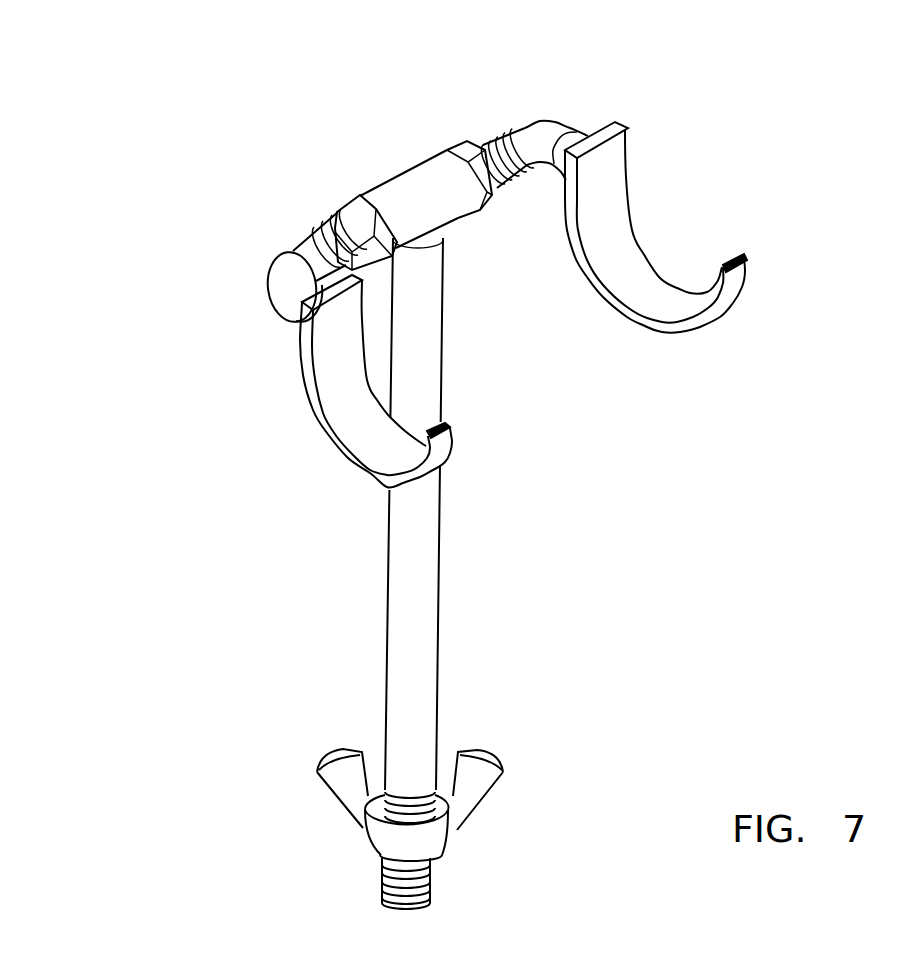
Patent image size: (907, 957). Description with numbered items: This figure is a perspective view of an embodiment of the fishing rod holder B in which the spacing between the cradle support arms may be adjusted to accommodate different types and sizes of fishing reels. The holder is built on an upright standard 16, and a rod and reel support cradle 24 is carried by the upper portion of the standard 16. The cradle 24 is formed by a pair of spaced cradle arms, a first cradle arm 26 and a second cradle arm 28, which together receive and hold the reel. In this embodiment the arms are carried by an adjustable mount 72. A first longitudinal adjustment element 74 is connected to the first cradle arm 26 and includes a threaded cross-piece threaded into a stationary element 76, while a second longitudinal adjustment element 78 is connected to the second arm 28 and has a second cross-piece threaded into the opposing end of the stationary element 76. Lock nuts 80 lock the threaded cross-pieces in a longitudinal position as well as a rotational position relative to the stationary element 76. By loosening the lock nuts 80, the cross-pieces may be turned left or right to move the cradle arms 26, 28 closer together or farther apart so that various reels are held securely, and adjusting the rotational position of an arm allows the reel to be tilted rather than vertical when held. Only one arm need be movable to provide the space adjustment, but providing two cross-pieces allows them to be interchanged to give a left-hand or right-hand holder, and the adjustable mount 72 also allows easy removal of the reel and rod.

The standard 16 is at (443, 621).
The rod and reel support cradle 24 is at (672, 213).
The first cradle arm 26 is at (748, 270).
The second cradle arm 28 is at (320, 432).
The adjustable mount 72 is at (353, 187).
The first longitudinal adjustment element 74 is at (547, 113).
The stationary element 76 is at (410, 163).
The second longitudinal adjustment element 78 is at (298, 243).
The lock nuts 80 is at (342, 202).
The rod holder B is at (273, 333).